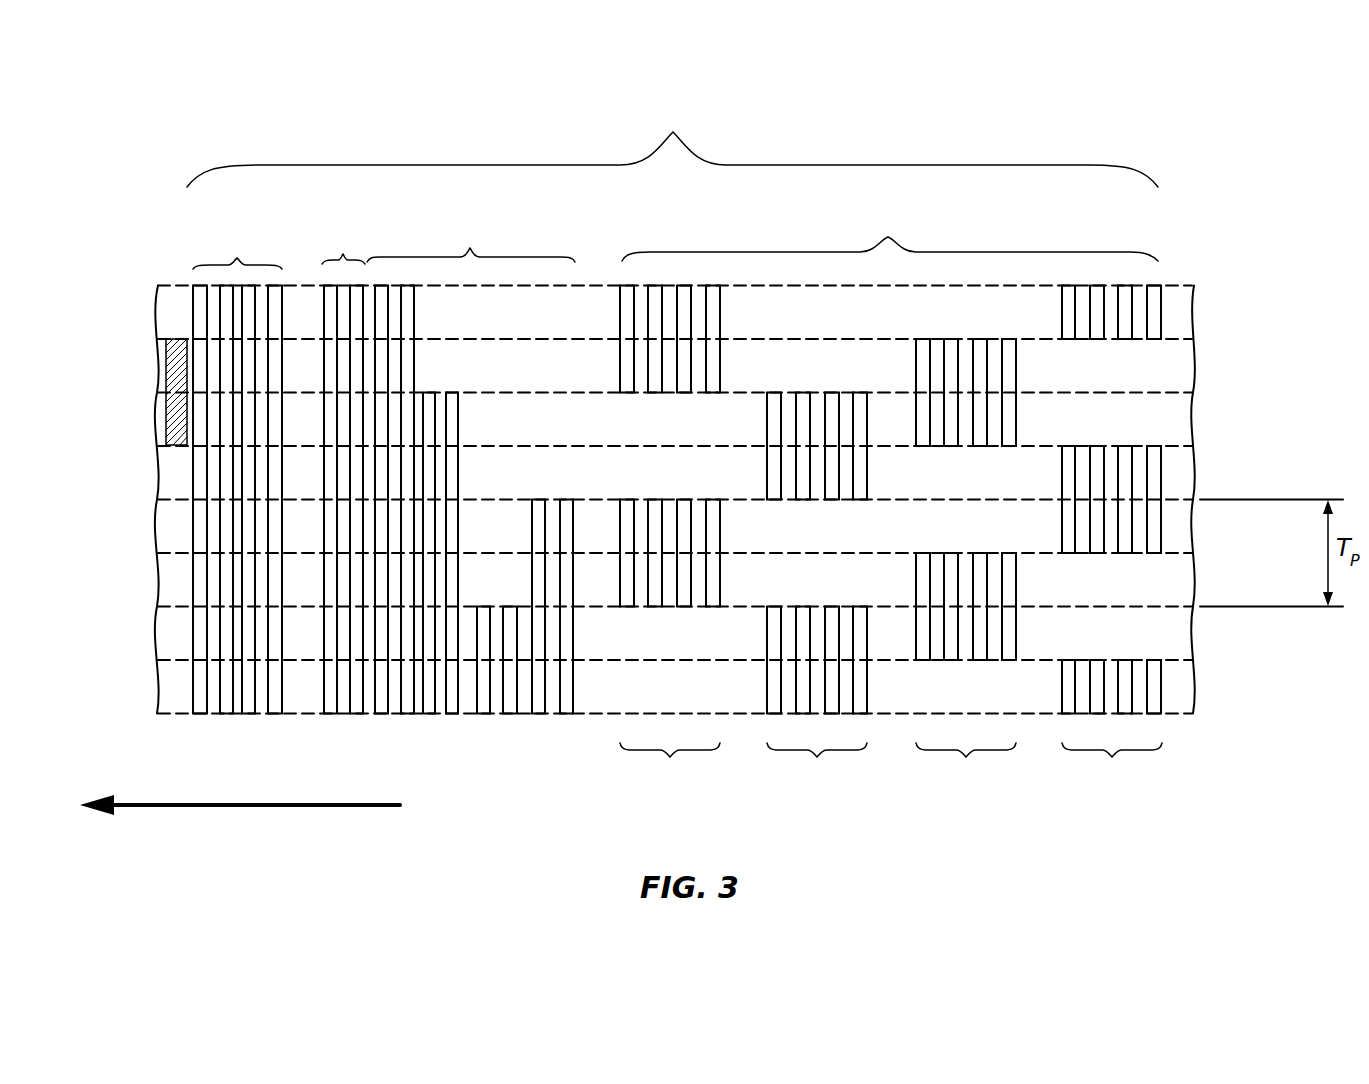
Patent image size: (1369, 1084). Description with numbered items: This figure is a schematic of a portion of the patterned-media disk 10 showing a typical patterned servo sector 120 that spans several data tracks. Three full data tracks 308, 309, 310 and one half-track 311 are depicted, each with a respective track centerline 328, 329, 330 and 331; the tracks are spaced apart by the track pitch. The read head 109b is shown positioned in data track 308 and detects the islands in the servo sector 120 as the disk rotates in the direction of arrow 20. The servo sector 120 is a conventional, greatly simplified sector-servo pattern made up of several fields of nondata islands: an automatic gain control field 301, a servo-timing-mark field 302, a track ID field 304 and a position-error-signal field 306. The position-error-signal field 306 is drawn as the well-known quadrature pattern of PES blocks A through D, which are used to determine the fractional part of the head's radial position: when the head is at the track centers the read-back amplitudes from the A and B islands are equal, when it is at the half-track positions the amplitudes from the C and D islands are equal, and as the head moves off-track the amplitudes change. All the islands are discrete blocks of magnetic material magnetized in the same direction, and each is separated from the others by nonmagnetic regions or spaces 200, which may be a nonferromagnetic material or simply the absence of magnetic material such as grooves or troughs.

The servo sector 120 is at (672, 144).
The automatic gain control (AGC) field 301 is at (193, 266).
The servo-timing-mark (STM) field 302 is at (320, 262).
The track ID (TID) field 304 is at (548, 255).
The position-error-signal (PES) field 306 is at (712, 252).
The read head 109b is at (171, 339).
The data track 308 is at (133, 339).
The data track 309 is at (133, 446).
The data track 310 is at (133, 553).
The half-track 311 is at (133, 660).
The track centerline 328 is at (1168, 392).
The track centerline 329 is at (1168, 499).
The track centerline 330 is at (1168, 606).
The track centerline 331 is at (1168, 713).
The patterned-media disk 10 is at (1192, 425).
The nonmagnetic spaces 200 is at (635, 497).
The direction of disk rotation 20 is at (270, 807).